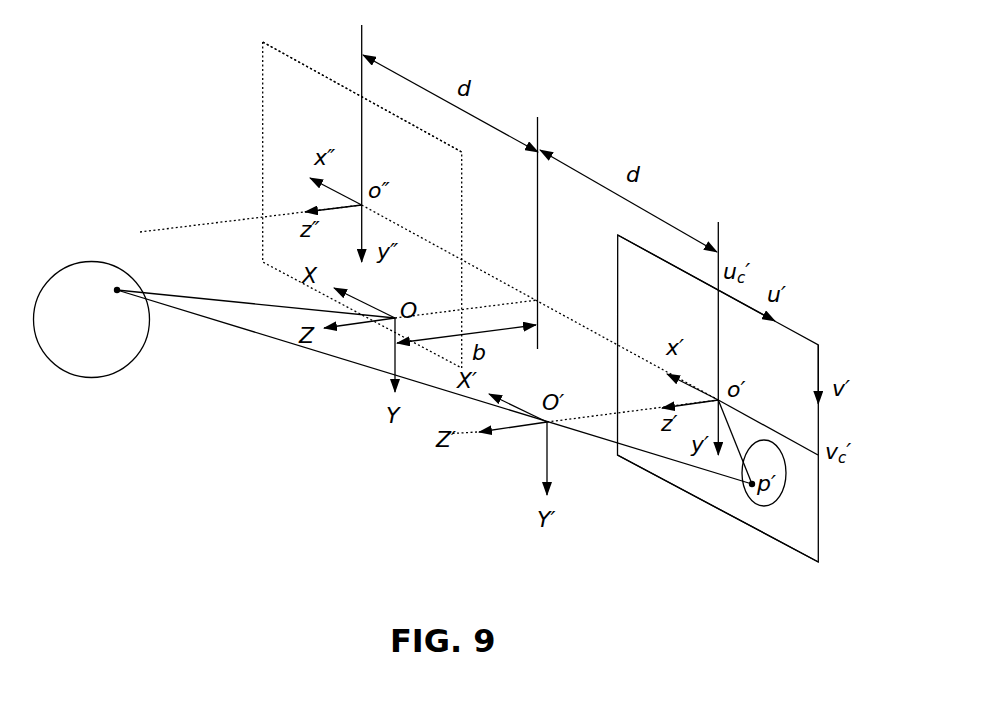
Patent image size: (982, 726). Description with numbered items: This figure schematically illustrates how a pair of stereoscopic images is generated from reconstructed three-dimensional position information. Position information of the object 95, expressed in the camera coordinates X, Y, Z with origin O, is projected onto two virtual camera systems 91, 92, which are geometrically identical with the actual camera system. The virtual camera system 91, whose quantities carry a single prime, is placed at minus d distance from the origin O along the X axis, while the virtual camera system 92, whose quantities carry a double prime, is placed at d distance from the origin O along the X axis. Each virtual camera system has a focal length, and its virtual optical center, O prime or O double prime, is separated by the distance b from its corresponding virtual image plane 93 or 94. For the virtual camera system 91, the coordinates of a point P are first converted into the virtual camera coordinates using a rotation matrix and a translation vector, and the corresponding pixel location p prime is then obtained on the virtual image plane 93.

The virtual camera system 91 is at (720, 522).
The virtual camera system 92 is at (258, 153).
The virtual image plane 93 is at (795, 530).
The virtual image plane 94 is at (273, 73).
The object 95 is at (120, 370).